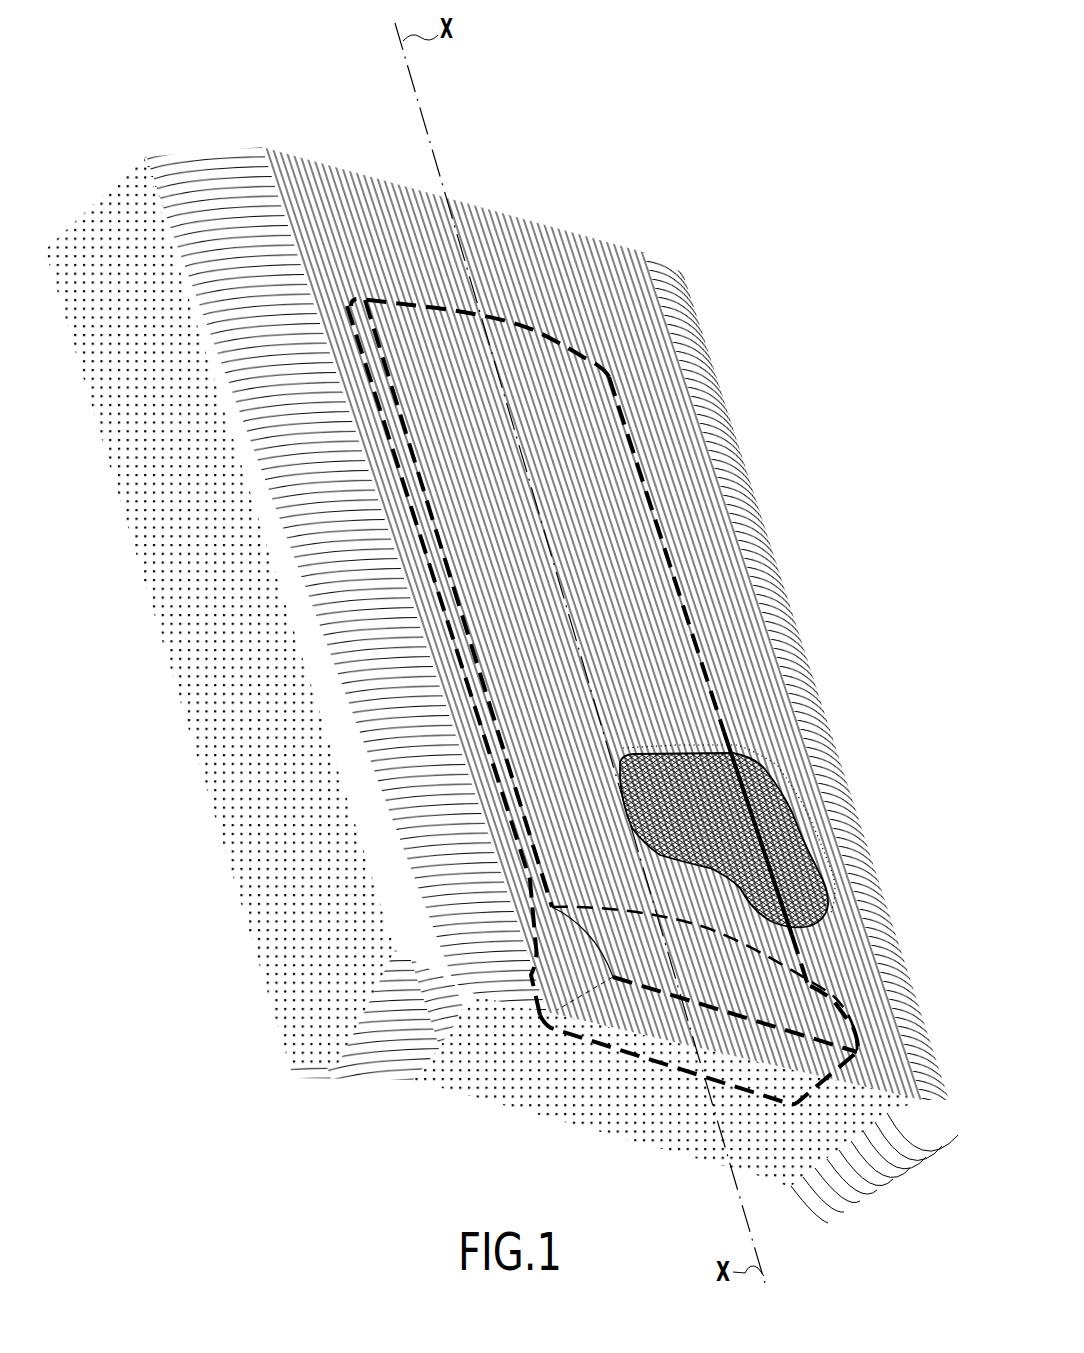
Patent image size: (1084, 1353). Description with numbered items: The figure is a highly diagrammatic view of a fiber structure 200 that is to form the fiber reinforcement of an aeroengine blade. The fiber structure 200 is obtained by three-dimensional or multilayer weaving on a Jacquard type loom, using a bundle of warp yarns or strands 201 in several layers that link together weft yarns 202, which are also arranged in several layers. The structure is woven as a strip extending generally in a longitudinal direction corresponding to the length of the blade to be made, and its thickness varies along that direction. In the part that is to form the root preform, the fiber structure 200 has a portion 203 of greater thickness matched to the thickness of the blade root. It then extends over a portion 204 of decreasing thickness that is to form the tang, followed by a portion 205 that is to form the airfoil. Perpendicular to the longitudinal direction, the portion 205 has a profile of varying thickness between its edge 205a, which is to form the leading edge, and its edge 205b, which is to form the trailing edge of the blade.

The fiber structure 200 is at (732, 818).
The warp yarns or strands 201 is at (308, 148).
The weft yarns 202 is at (736, 447).
The portion of greater thickness 203 is at (533, 975).
The portion of decreasing thickness 204 is at (552, 907).
The airfoil portion 205 is at (597, 637).
The leading edge 205a is at (478, 716).
The trailing edge 205b is at (663, 552).